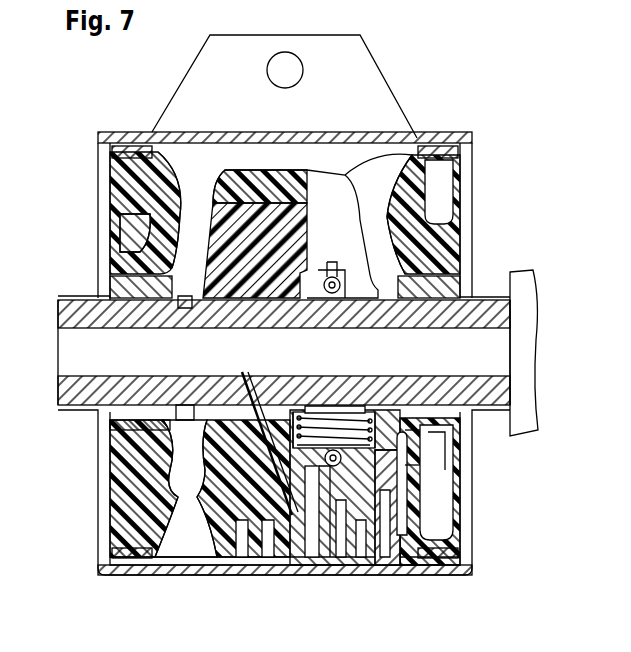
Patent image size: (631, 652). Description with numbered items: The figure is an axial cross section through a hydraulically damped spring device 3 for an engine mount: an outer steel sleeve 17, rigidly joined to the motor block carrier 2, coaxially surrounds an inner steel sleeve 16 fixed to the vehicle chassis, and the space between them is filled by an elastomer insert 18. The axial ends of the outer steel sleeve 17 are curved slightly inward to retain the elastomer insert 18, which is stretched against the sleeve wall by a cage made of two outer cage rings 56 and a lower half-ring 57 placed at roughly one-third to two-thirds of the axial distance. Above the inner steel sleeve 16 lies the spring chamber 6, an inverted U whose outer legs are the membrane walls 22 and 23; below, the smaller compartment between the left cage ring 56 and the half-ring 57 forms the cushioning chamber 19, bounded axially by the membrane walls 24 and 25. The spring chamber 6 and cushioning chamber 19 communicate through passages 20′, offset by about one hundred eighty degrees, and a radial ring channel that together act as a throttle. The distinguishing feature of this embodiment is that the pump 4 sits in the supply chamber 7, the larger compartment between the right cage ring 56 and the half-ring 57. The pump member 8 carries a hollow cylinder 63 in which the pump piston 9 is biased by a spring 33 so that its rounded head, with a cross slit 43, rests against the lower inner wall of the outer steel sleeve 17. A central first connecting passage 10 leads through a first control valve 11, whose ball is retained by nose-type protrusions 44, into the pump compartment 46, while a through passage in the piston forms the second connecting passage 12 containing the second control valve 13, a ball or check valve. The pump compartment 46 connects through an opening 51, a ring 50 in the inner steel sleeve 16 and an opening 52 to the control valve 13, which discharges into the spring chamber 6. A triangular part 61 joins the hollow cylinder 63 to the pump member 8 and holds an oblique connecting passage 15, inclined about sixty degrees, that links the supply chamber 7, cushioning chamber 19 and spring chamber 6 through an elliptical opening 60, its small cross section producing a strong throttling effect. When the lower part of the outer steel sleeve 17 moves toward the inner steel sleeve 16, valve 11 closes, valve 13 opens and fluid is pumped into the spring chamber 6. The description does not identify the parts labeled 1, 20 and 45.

The flange 1 is at (525, 275).
The motor block carrier 2 is at (205, 73).
The spring device 3 is at (88, 452).
The pump 4 is at (310, 570).
The spring chamber 6 is at (343, 153).
The supply chamber 7 is at (402, 565).
The pump member 8 is at (385, 570).
The pump piston 9 is at (288, 570).
The first connecting passage 10 is at (325, 570).
The first control valve 11 is at (365, 470).
The second connecting passage 12 is at (325, 418).
The second control valve 13 is at (350, 283).
The connecting passage 15 is at (262, 427).
The inner steel sleeve 16 is at (87, 314).
The outer steel sleeve 17 is at (397, 137).
The elastomer insert 18 is at (128, 248).
The cushioning chamber 19 is at (180, 575).
The elastic column 20 is at (197, 282).
The passage 20′ is at (140, 273).
The membrane wall 22 is at (128, 178).
The membrane wall 23 is at (435, 250).
The membrane wall 24 is at (140, 512).
The membrane wall 25 is at (215, 566).
The spring 33 is at (377, 430).
The cross slit 43 is at (345, 570).
The nose-type protrusions 44 is at (400, 467).
The ball 45 is at (333, 262).
The pump compartment 46 is at (405, 435).
The ring 50 is at (362, 420).
The opening 51 is at (310, 410).
The opening 52 is at (327, 298).
The outer cage ring 56 is at (112, 545).
The half-ring 57 is at (245, 575).
The oval opening 60 is at (270, 570).
The triangular part 61 is at (186, 488).
The hollow cylinder 63 is at (362, 570).